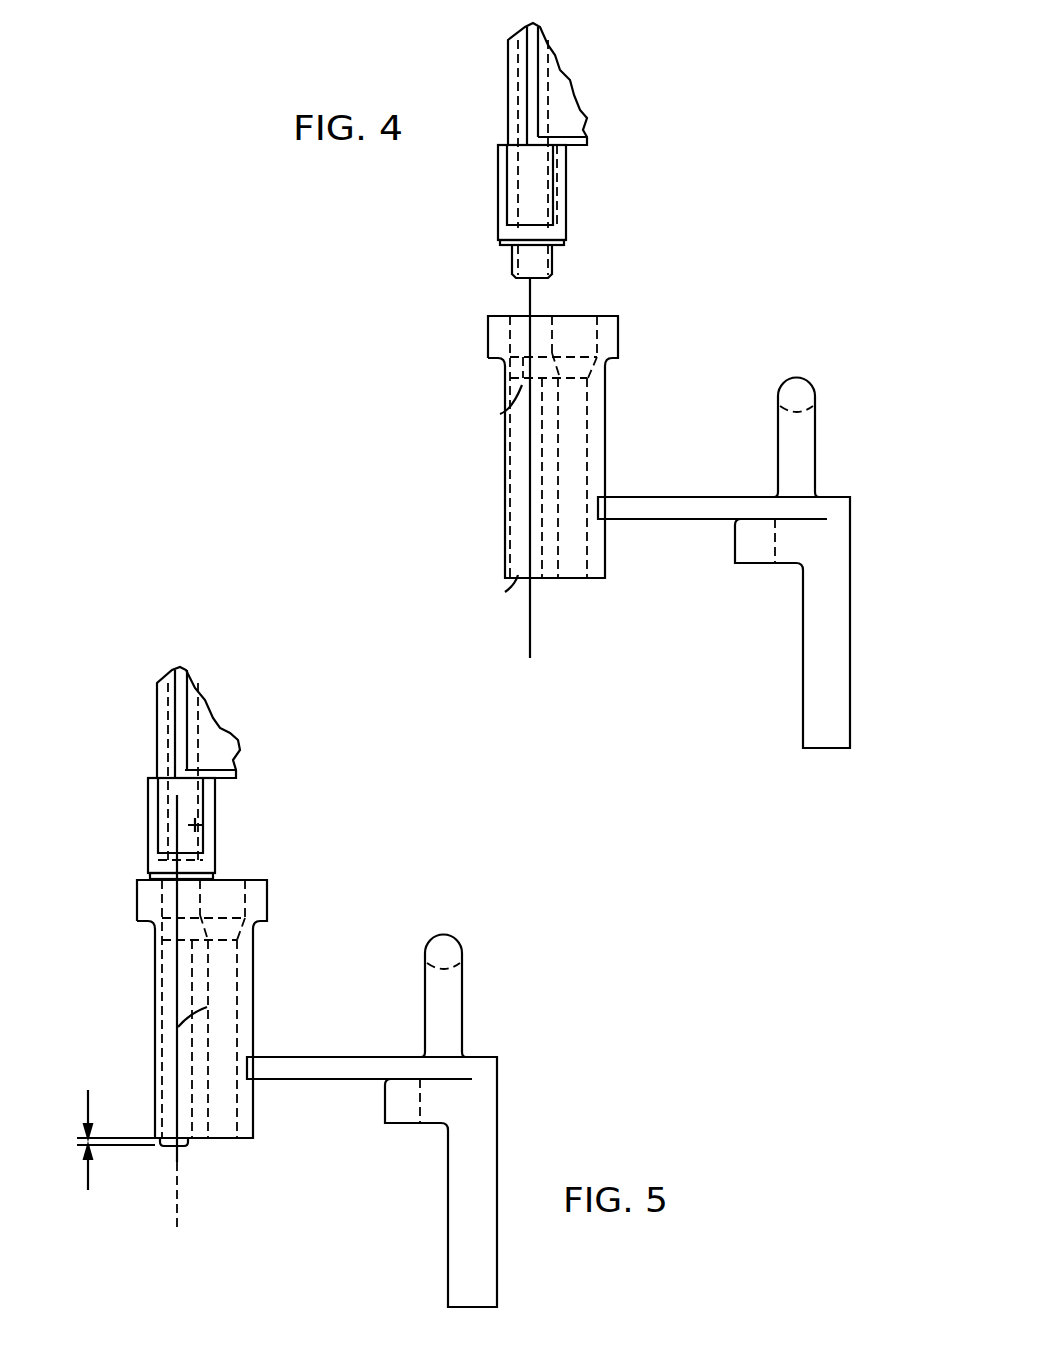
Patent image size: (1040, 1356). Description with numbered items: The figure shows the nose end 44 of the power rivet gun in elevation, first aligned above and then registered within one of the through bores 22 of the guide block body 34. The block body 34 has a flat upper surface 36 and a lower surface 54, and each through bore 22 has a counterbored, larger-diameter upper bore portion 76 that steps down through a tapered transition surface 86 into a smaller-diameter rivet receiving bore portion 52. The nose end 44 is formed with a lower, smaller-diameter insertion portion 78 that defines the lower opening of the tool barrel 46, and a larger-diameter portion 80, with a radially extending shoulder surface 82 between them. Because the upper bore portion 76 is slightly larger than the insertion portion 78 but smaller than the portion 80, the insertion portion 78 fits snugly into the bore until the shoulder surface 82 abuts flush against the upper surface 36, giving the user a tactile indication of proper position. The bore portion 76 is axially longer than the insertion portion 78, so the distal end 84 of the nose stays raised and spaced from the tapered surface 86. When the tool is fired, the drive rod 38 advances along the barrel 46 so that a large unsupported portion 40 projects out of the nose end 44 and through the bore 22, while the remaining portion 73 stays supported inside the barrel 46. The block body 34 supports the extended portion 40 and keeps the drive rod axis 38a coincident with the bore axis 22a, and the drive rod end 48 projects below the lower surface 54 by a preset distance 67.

In FIG. 4, the through bores 22 is at (510, 520).
In FIG. 5, the through bores 22 is at (160, 1005).
In FIG. 4, the bore axis 22a is at (526, 620).
In FIG. 4, the block body 34 is at (510, 483).
In FIG. 5, the block body 34 is at (204, 1033).
In FIG. 4, the upper surface 36 is at (605, 317).
In FIG. 5, the upper surface 36 is at (202, 904).
In FIG. 5, the drive rod 38 is at (188, 893).
In FIG. 5, the longitudinal axis of drive rod 38a is at (207, 1007).
In FIG. 5, the drive rod portion 40 is at (165, 1100).
In FIG. 4, the nose end 44 is at (478, 232).
In FIG. 4, the barrel 46 is at (528, 72).
In FIG. 5, the barrel 46 is at (198, 763).
In FIG. 5, the drive rod end 48 is at (183, 1146).
In FIG. 4, the rivet receiving bore portion 52 is at (505, 592).
In FIG. 4, the guide block lower surface 54 is at (724, 563).
In FIG. 5, the guide block lower surface 54 is at (240, 1140).
In FIG. 5, the preset distance 67 is at (88, 1103).
In FIG. 5, the drive rod portion supported in barrel 73 is at (215, 825).
In FIG. 4, the upper bore portion 76 is at (540, 328).
In FIG. 4, the nose insertion portion 78 is at (553, 263).
In FIG. 4, the larger diameter nose portion 80 is at (567, 198).
In FIG. 5, the larger diameter nose portion 80 is at (181, 825).
In FIG. 4, the shoulder surface 82 is at (567, 241).
In FIG. 5, the shoulder surface 82 is at (181, 876).
In FIG. 5, the distal end of nose 84 is at (197, 913).
In FIG. 4, the tapered transition surface 86 is at (500, 414).